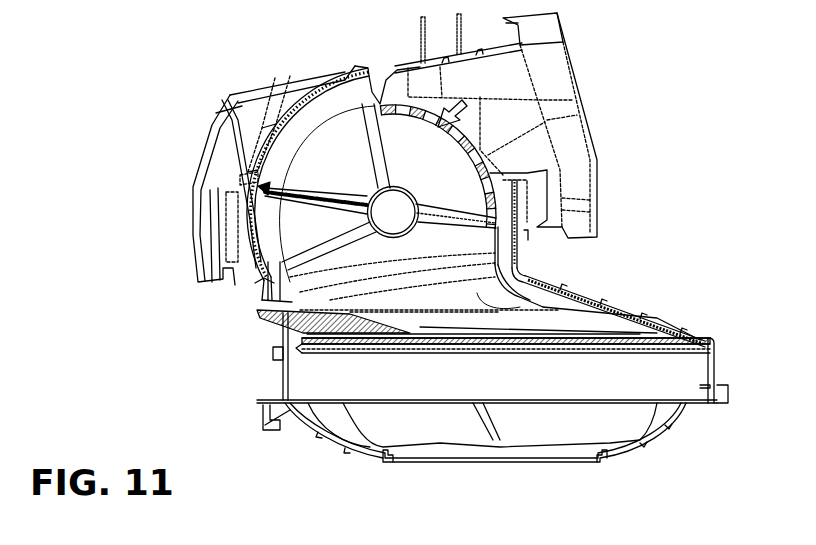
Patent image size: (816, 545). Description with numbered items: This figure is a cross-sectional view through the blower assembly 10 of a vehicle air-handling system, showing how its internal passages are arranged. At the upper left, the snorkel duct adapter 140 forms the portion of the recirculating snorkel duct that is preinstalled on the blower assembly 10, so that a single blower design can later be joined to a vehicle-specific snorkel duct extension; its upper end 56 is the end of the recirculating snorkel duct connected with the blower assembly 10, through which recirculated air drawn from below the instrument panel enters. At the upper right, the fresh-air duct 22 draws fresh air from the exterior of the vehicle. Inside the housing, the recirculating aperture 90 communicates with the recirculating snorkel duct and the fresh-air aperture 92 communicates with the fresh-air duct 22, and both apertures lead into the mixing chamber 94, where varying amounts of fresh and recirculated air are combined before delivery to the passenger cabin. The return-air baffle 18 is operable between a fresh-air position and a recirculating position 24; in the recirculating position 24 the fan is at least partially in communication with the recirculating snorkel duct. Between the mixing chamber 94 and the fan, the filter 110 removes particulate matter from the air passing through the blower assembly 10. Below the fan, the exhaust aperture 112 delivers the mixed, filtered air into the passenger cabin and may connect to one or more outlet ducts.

The blower assembly 10 is at (166, 117).
The snorkel duct adapter 140 is at (223, 110).
The recirculating position 24 is at (225, 146).
The upper end of the recirculating snorkel duct 56 is at (330, 72).
The recirculating aperture 90 is at (262, 198).
The fresh-air duct 22 is at (565, 30).
The fresh-air aperture 92 is at (573, 145).
The mixing chamber 94 is at (477, 293).
The return-air baffle 18 is at (262, 283).
The filter 110 is at (620, 347).
The exhaust aperture 112 is at (490, 462).